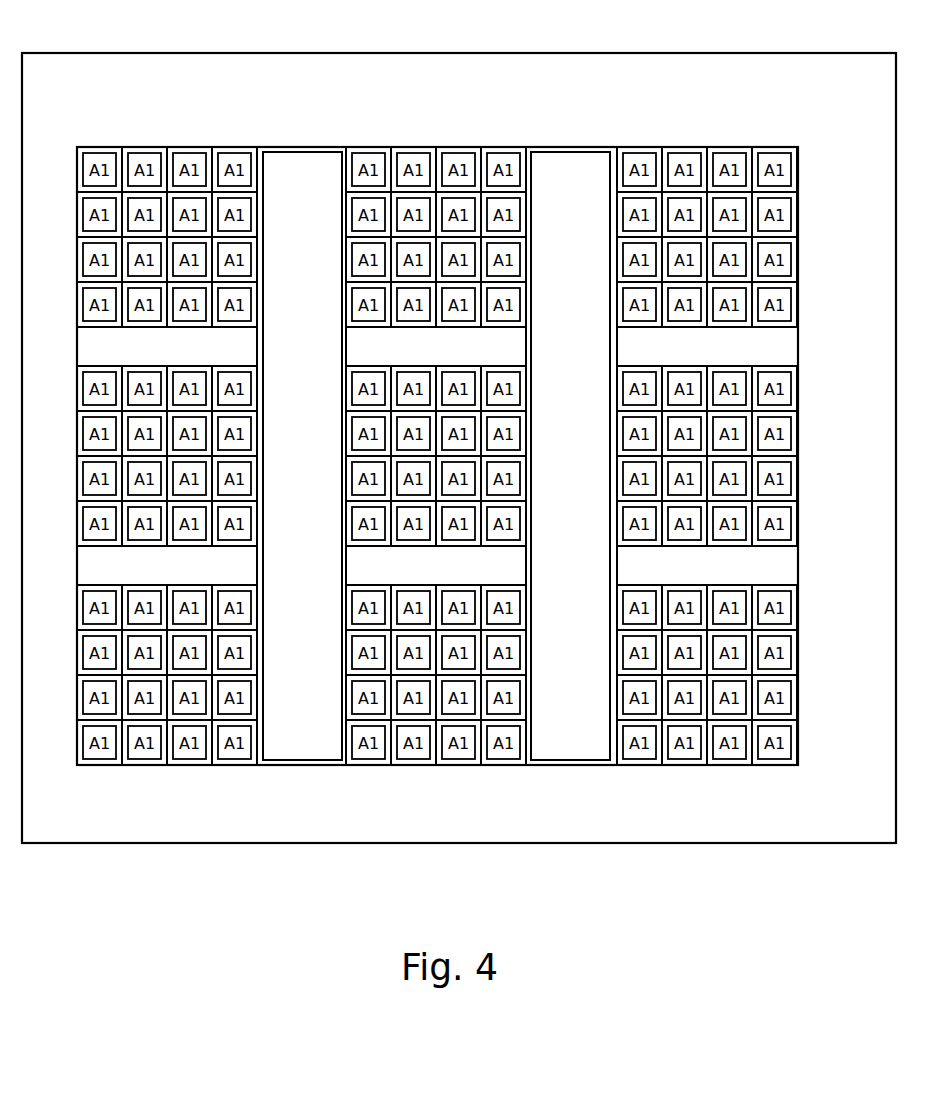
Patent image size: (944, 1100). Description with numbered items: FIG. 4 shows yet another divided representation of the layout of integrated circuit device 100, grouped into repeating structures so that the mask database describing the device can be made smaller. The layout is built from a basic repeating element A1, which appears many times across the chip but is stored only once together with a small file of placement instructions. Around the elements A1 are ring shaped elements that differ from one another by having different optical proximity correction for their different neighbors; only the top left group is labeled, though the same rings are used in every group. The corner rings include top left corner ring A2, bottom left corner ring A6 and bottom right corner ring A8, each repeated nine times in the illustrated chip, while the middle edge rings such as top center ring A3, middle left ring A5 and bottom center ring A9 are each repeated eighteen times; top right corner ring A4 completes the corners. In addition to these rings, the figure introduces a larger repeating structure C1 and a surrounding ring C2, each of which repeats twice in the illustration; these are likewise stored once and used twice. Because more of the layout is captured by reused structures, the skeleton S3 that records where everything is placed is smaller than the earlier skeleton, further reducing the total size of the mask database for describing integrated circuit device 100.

The integrated circuit device 100 is at (138, 53).
The skeleton S3 is at (437, 428).
The repeating element A1 is at (437, 456).
The top left corner ring structure A2 is at (89, 147).
The top center ring structure A3 is at (145, 150).
The top right corner ring structure A4 is at (228, 147).
The middle left ring structure A5 is at (78, 209).
The bottom left corner ring structure A6 is at (78, 309).
The bottom right corner ring structure A8 is at (237, 323).
The bottom center ring structure A9 is at (157, 323).
The repeating structure C1 is at (436, 456).
The ring C2 is at (303, 765).